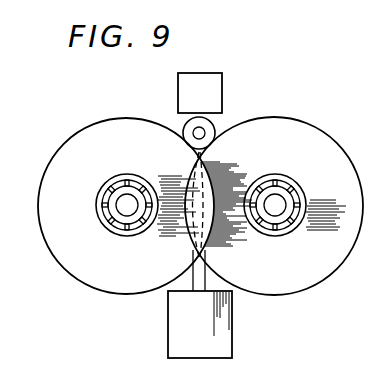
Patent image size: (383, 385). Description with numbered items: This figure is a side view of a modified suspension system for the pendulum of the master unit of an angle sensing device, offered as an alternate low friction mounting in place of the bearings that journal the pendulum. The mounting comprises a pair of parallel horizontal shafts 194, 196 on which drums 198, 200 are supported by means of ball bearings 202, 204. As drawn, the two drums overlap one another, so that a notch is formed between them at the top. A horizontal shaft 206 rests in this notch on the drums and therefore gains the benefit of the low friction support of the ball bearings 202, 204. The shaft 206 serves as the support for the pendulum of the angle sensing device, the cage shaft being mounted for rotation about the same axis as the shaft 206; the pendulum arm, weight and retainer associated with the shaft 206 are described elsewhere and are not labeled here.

The horizontal shaft 194 is at (120, 206).
The horizontal shaft 196 is at (278, 202).
The drum 198 is at (105, 285).
The drum 200 is at (282, 283).
The ball bearing 202 is at (118, 176).
The ball bearing 204 is at (303, 200).
The horizontal shaft 206 is at (207, 130).